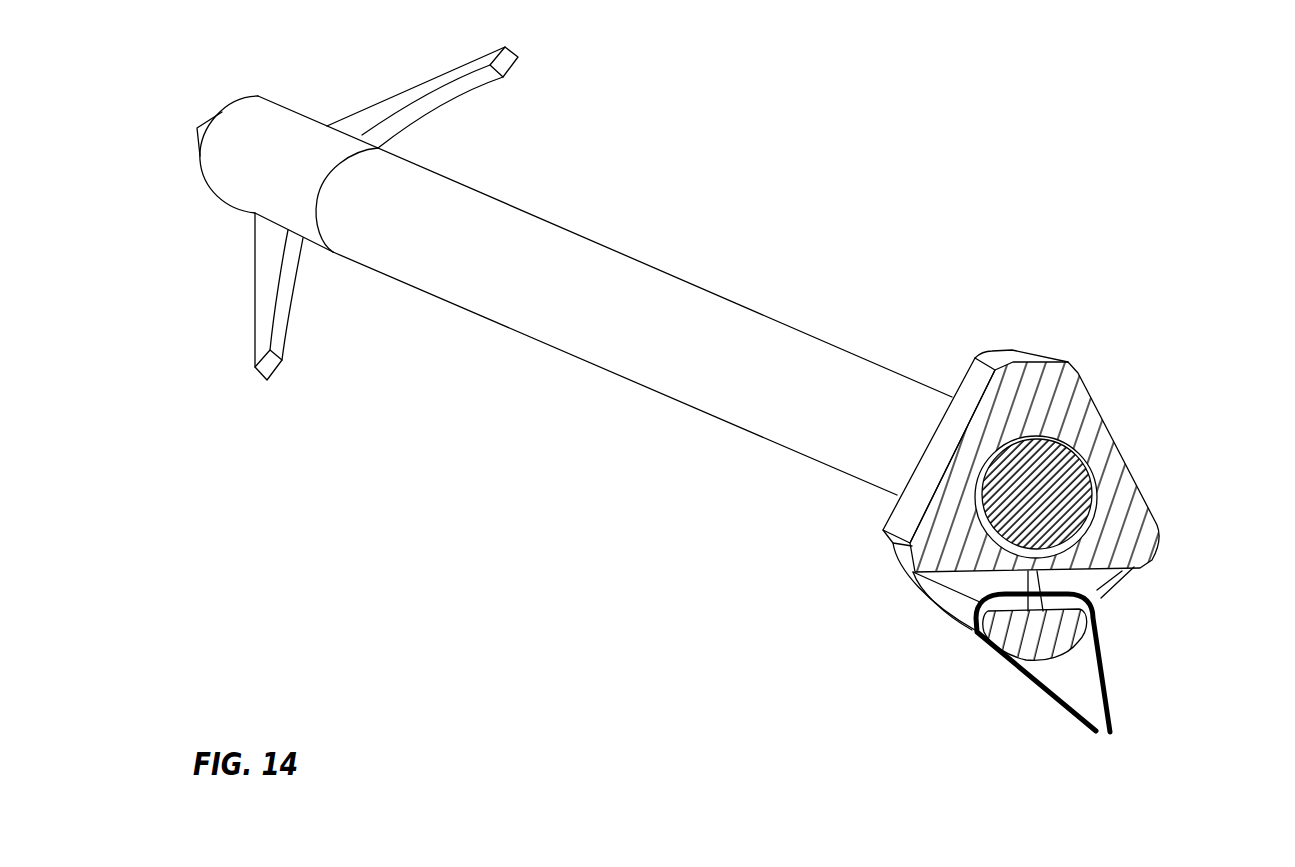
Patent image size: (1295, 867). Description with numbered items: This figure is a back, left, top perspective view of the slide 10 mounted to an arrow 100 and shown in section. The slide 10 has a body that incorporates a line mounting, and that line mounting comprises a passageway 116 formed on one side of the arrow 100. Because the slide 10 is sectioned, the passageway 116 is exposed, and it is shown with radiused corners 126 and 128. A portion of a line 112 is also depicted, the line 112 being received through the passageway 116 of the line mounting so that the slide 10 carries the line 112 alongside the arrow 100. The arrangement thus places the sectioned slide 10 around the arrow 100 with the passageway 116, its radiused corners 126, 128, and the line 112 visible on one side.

The slide 10 is at (988, 360).
The arrow 100 is at (1063, 450).
The line 112 is at (1108, 697).
The passageway 116 is at (1096, 575).
The radiused corner 126 is at (1098, 598).
The radiused corner 128 is at (970, 612).